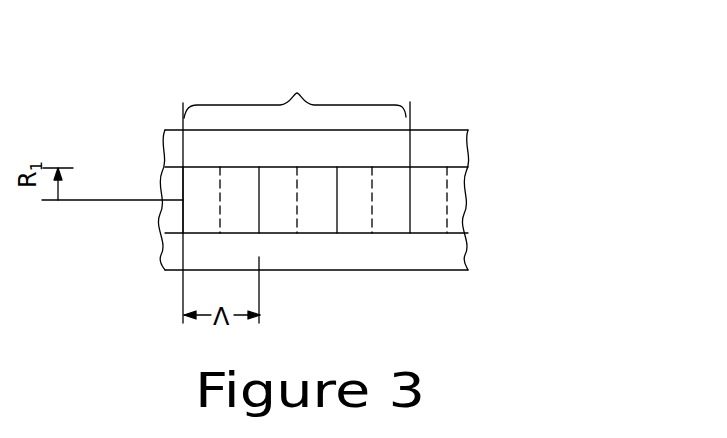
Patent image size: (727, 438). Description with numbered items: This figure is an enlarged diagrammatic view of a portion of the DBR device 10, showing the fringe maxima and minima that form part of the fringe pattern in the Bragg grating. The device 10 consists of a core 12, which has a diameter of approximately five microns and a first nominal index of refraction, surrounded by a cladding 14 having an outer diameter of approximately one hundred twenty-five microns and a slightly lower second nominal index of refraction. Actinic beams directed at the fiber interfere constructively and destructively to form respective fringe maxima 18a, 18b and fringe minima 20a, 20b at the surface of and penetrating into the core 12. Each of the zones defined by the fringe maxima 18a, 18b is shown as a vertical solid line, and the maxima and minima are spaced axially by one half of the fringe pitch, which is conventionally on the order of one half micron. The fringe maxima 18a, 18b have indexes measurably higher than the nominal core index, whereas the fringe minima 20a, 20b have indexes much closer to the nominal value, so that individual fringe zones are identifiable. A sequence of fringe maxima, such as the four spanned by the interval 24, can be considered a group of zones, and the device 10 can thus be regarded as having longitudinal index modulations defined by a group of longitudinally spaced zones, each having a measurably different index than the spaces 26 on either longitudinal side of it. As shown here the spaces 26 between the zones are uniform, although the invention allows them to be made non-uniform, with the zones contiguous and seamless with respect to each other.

The DBR device 10 is at (422, 106).
The core 12 is at (460, 213).
The cladding 14 is at (445, 140).
The fringe maximum 18a is at (181, 200).
The fringe maximum 18b is at (260, 200).
The fringe minimum 20a is at (220, 200).
The fringe minimum 20b is at (297, 198).
The interval 24 is at (298, 93).
The spaces 26 is at (203, 183).